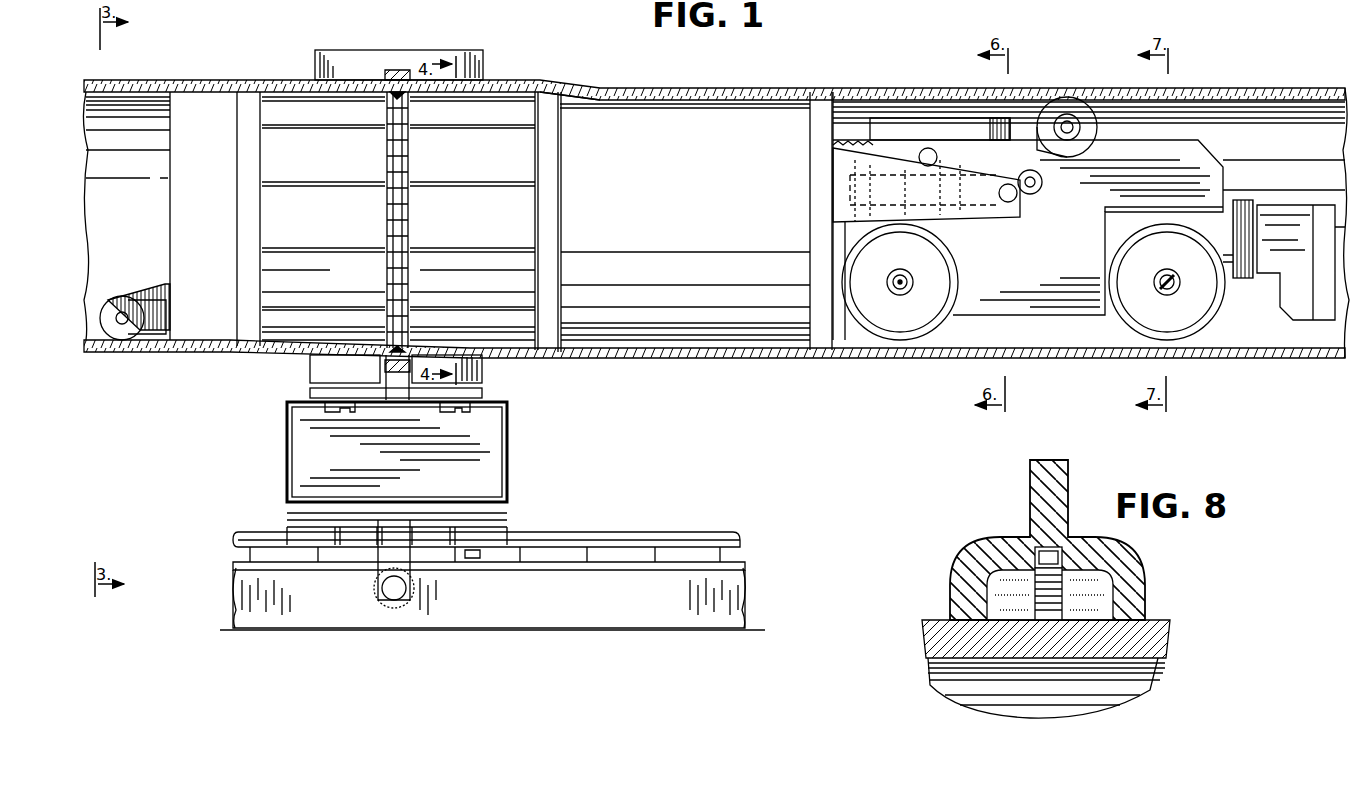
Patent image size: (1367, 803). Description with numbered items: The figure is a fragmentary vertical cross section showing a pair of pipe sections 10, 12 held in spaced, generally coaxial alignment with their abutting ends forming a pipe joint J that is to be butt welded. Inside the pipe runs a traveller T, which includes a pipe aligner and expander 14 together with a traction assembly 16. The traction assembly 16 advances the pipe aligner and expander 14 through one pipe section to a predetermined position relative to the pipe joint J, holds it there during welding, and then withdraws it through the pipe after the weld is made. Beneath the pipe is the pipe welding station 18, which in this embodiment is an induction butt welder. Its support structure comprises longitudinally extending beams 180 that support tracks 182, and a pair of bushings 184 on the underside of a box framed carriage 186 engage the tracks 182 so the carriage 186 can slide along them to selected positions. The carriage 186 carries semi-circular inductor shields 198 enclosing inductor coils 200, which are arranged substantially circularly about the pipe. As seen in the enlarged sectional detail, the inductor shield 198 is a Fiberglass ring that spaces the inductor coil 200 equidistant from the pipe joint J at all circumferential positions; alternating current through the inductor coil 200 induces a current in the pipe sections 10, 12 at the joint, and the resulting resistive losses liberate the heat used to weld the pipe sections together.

In FIG. 1, the pipe section 10 is at (160, 80).
In FIG. 8, the pipe section 10 is at (935, 635).
In FIG. 1, the pipe section 12 is at (776, 90).
In FIG. 8, the pipe section 12 is at (1160, 648).
In FIG. 1, the pipe aligner and expander 14 is at (585, 110).
In FIG. 1, the traction assembly 16 is at (1055, 325).
In FIG. 1, the pipe welding station 18 is at (528, 436).
In FIG. 1, the beam 180 is at (545, 612).
In FIG. 1, the track 182 is at (588, 532).
In FIG. 1, the bushing 184 is at (470, 560).
In FIG. 1, the box framed carriage 186 is at (290, 452).
In FIG. 1, the inductor shield 198 is at (387, 70).
In FIG. 8, the inductor shield 198 is at (960, 572).
In FIG. 1, the inductor coil 200 is at (400, 70).
In FIG. 8, the inductor coil 200 is at (1033, 540).
In FIG. 1, the pipe joint J is at (386, 82).
In FIG. 1, the traveller T is at (690, 126).